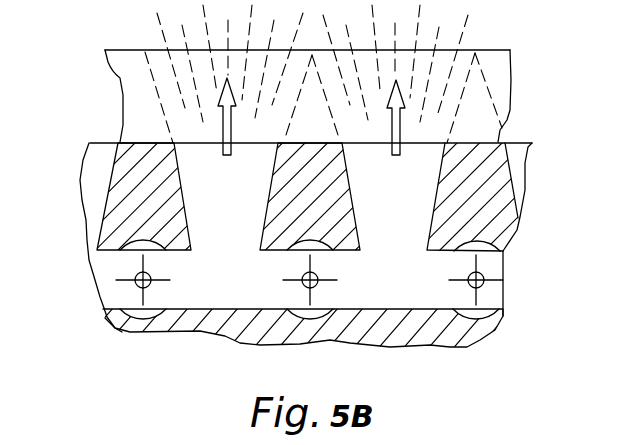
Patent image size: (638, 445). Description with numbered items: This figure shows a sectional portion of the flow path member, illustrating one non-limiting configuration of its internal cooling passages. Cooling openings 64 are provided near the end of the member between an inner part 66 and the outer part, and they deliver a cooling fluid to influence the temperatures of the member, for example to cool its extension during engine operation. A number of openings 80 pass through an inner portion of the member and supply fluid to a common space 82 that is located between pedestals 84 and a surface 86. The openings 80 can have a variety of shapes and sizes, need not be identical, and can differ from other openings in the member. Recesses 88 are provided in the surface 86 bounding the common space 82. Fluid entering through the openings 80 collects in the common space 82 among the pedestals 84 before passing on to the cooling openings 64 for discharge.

The inner part 66 is at (133, 80).
The cooling openings 64 is at (200, 167).
The pedestals 84 is at (143, 217).
The common space 82 is at (103, 276).
The openings 80 is at (302, 285).
The surface 86 is at (362, 305).
The recesses 88 is at (143, 324).